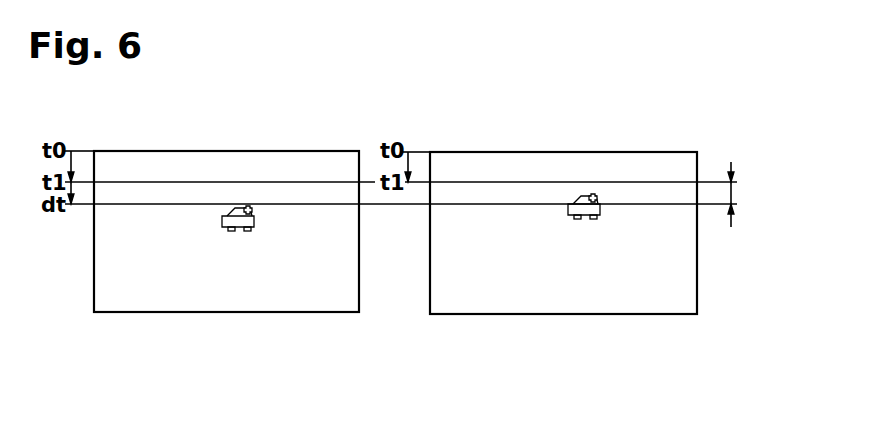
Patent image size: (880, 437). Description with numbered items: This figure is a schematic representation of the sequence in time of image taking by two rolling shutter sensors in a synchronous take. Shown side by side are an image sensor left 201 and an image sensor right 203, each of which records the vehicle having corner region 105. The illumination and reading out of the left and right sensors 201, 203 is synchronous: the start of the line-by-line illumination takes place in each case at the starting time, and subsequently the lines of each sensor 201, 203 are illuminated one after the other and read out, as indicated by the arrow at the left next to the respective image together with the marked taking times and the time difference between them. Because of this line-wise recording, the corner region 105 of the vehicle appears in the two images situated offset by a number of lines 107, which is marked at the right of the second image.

The image sensor left 201 is at (132, 151).
The image sensor right 203 is at (474, 152).
The corner region 105 is at (248, 206).
The number of lines 107 is at (731, 194).